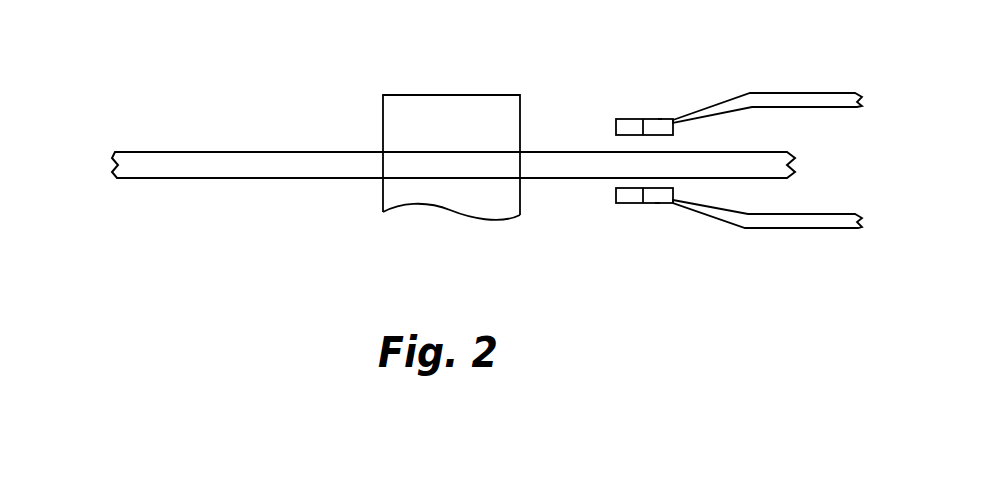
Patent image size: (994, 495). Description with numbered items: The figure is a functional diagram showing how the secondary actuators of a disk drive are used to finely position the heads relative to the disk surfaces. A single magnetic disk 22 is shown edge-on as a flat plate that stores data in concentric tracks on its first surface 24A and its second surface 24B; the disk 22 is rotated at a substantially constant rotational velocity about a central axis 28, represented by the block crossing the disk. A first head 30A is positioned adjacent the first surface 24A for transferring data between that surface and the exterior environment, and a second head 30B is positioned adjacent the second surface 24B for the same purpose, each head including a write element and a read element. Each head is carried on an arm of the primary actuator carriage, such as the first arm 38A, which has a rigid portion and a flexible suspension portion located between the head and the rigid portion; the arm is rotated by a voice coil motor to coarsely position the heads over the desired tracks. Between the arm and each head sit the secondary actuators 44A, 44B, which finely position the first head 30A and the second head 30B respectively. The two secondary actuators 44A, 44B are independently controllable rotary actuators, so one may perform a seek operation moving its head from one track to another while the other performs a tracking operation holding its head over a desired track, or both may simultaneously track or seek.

The magnetic disk 22 is at (267, 124).
The first surface 24A is at (187, 152).
The second surface 24B is at (162, 178).
The central axis 28 is at (452, 95).
The first head 30A is at (615, 128).
The second head 30B is at (615, 194).
The first arm 38A is at (783, 92).
The secondary actuator 44A is at (660, 118).
The secondary actuator 44B is at (657, 204).